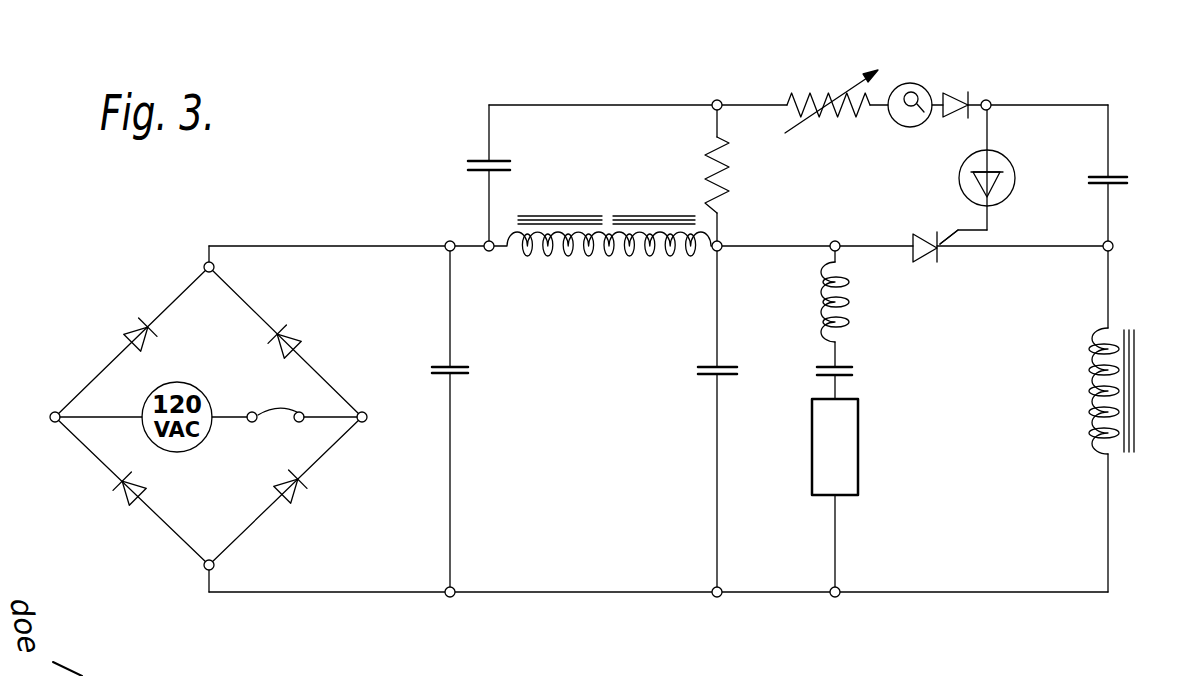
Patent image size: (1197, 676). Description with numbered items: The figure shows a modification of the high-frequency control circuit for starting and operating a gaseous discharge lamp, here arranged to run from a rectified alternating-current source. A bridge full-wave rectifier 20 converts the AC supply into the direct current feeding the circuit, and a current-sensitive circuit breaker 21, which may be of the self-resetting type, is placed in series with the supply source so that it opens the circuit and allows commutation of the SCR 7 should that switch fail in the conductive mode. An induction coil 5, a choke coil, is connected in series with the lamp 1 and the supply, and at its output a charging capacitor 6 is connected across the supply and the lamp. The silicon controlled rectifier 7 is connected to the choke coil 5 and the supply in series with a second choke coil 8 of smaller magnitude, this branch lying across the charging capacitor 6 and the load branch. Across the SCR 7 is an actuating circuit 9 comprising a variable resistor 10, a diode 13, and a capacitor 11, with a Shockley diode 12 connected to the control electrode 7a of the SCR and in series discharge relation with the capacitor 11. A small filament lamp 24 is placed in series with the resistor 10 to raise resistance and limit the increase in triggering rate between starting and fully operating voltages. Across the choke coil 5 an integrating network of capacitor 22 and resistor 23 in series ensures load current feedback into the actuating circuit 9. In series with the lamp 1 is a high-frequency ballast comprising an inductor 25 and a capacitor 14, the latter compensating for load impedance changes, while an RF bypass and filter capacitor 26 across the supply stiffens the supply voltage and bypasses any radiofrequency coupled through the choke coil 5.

The lamp 1 is at (860, 435).
The induction coil 5 is at (608, 226).
The charging capacitor 6 is at (697, 372).
The silicon controlled rectifier 7 is at (927, 268).
The control electrode 7a is at (952, 232).
The choke coil 8 is at (1137, 400).
The actuating circuit 9 is at (958, 143).
The variable resistor 10 is at (832, 124).
The capacitor 11 is at (1128, 183).
The Shockley diode 12 is at (1016, 178).
The diode 13 is at (952, 117).
The capacitor 14 is at (853, 371).
The bridge full-wave rectifier 20 is at (115, 450).
The current-sensitive circuit breaker 21 is at (292, 405).
The capacitor 22 is at (457, 166).
The resistor 23 is at (705, 167).
The filament lamp 24 is at (913, 76).
The inductor 25 is at (848, 316).
The RF bypass and filter capacitor 26 is at (470, 372).